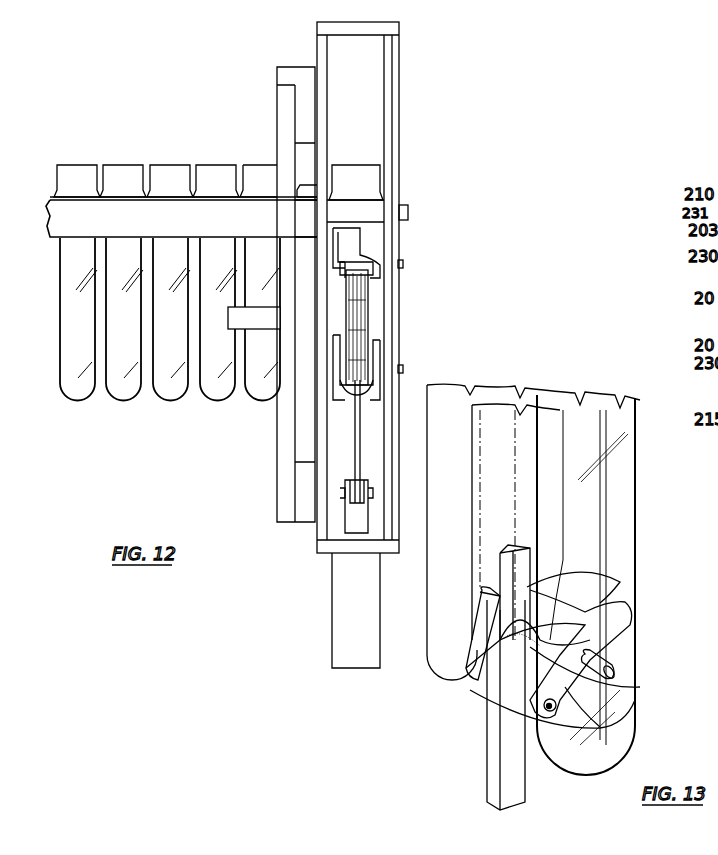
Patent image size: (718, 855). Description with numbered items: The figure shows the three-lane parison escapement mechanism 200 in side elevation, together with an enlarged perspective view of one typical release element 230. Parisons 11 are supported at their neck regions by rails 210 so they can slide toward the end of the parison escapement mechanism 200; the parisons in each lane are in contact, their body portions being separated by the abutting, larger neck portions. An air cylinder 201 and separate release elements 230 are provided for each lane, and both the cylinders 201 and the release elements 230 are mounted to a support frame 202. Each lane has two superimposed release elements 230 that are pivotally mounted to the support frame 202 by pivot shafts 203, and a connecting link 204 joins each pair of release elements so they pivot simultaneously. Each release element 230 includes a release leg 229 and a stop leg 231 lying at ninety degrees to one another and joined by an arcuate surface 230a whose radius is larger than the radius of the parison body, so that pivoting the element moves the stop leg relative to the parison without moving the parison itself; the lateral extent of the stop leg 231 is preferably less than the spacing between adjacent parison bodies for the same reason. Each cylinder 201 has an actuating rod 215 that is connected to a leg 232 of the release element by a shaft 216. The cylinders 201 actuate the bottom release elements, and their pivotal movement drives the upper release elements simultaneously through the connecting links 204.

In FIG. 12, the parison escapement mechanism 200 is at (122, 130).
In FIG. 12, the parison 11 is at (84, 398).
In FIG. 13, the parison 11 is at (625, 533).
In FIG. 12, the support frame 202 is at (400, 86).
In FIG. 12, the rail 210 is at (410, 212).
In FIG. 12, the pivot shaft 203 is at (404, 264).
In FIG. 13, the pivot shaft 203 is at (615, 680).
In FIG. 12, the release element 230 is at (378, 278).
In FIG. 13, the release element 230 is at (650, 608).
In FIG. 12, the connecting link 204 is at (358, 316).
In FIG. 13, the connecting link 204 is at (482, 550).
In FIG. 12, the actuating rod 215 is at (355, 442).
In FIG. 13, the actuating rod 215 is at (490, 770).
In FIG. 12, the air cylinder 201 is at (338, 616).
In FIG. 13, the stop leg 231 is at (500, 590).
In FIG. 13, the arcuate surface 230a is at (620, 582).
In FIG. 13, the release leg 229 is at (598, 640).
In FIG. 13, the leg 232 is at (610, 718).
In FIG. 13, the shaft 216 is at (625, 748).